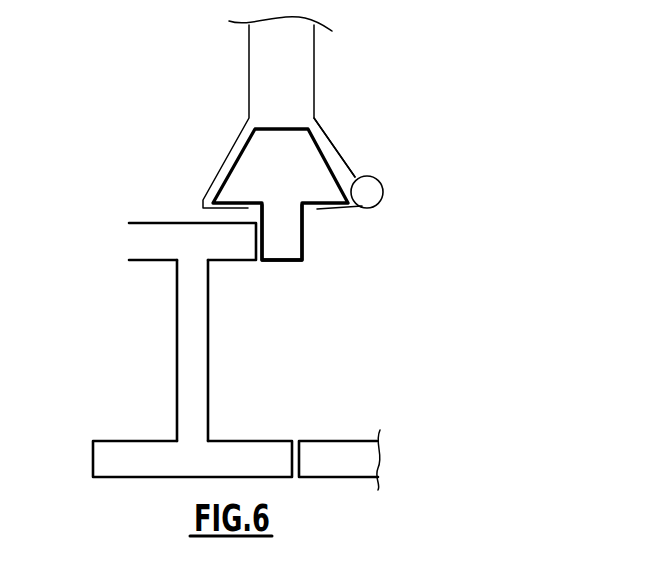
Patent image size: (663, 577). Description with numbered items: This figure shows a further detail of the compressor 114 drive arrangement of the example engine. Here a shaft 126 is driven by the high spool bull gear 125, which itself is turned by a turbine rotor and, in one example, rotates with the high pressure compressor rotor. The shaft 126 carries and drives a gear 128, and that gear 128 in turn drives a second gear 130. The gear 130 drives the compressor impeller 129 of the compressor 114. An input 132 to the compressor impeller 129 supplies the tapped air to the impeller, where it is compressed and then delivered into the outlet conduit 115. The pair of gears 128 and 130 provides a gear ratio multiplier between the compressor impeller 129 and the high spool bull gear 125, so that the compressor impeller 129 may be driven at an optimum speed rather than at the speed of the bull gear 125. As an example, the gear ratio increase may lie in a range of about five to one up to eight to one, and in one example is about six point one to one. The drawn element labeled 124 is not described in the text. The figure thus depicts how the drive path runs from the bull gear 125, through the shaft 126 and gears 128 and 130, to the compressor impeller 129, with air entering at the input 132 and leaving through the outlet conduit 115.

The compressor 114 is at (372, 117).
The outlet conduit 115 is at (373, 192).
The base flange 124 is at (119, 458).
The bull gear 125 is at (335, 452).
The shaft 126 is at (197, 379).
The gear 128 is at (158, 238).
The compressor impeller 129 is at (260, 165).
The gear 130 is at (293, 242).
The input 132 is at (292, 60).